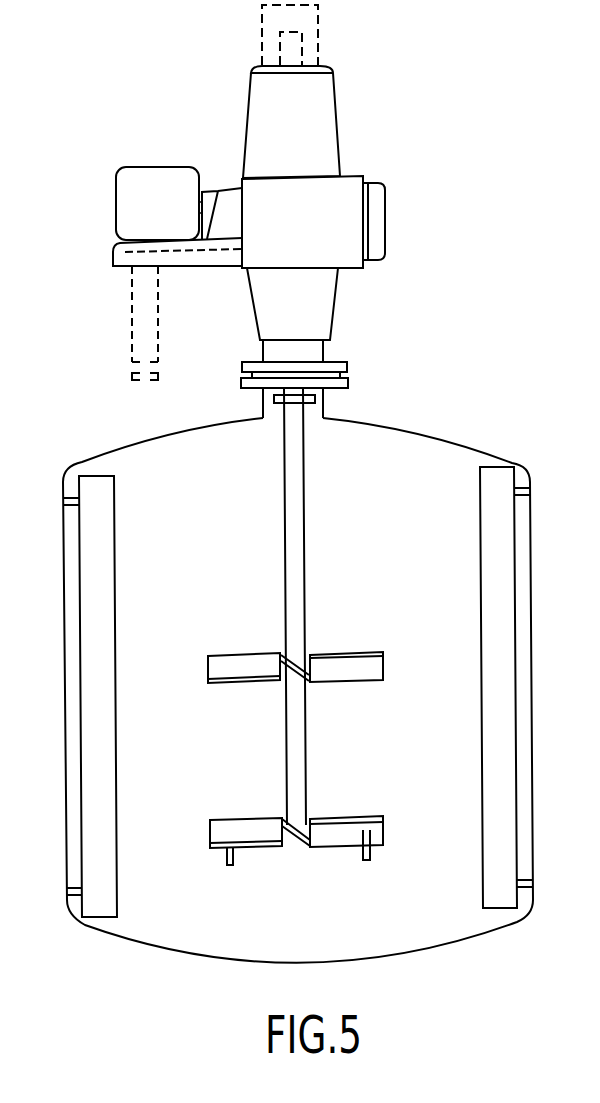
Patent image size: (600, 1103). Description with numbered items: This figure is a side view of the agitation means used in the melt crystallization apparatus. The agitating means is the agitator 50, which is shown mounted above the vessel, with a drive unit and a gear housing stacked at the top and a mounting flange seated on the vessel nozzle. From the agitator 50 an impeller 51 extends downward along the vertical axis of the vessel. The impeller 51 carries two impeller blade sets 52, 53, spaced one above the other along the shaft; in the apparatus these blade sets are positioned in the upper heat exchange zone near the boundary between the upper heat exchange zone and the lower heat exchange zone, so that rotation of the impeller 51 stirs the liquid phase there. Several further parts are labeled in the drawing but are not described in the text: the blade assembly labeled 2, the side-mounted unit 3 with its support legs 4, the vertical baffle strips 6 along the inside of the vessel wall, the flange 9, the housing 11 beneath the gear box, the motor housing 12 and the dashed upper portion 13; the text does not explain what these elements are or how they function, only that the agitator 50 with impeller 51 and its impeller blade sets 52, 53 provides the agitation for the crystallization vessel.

The stirring blades 2 is at (295, 726).
The drive motor 3 is at (127, 167).
The support legs 4 is at (158, 299).
The baffles 6 is at (118, 828).
The mounting flange 9 is at (245, 364).
The seal housing 11 is at (328, 345).
The motor housing 12 is at (307, 122).
The motor 13 is at (331, 35).
The agitator 50 is at (345, 283).
The impeller 51 is at (303, 582).
The impeller blade set 52 is at (370, 652).
The impeller blade set 53 is at (372, 818).